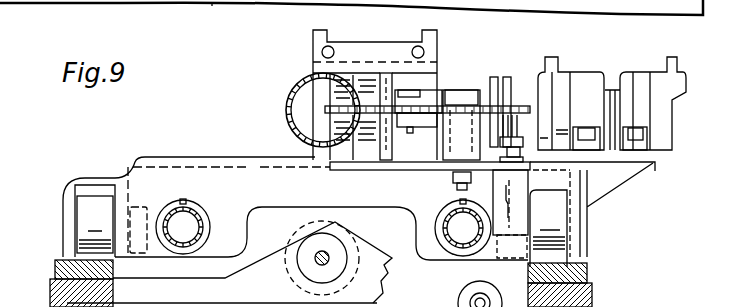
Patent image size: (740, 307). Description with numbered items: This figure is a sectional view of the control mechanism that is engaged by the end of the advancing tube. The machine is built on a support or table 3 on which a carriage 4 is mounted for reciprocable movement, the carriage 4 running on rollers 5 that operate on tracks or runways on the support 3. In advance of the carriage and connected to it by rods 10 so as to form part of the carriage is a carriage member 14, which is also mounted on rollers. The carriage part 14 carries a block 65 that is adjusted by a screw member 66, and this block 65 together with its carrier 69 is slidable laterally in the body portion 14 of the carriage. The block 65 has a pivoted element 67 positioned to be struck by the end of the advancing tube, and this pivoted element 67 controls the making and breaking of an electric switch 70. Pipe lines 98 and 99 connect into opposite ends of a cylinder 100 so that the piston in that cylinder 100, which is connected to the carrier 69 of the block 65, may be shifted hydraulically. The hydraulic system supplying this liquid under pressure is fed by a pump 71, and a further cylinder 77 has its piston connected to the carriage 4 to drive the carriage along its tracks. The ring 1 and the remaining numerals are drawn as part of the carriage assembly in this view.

The knurled adjusting ring 1 is at (288, 103).
The support or table 3 is at (50, 293).
The carriage 4 is at (205, 8).
The rollers 5 is at (90, 232).
The rods 10 is at (193, 217).
The carriage member 14 is at (313, 50).
The block 65 is at (333, 97).
The screw member 66 is at (360, 62).
The pivoted element 67 is at (393, 88).
The carrier 69 is at (397, 90).
The electric switch 70 is at (526, 122).
The pump 71 is at (467, 294).
The cylinder 77 is at (330, 248).
The pipe line 98 is at (681, 48).
The pipe line 99 is at (551, 57).
The cylinder 100 is at (612, 90).